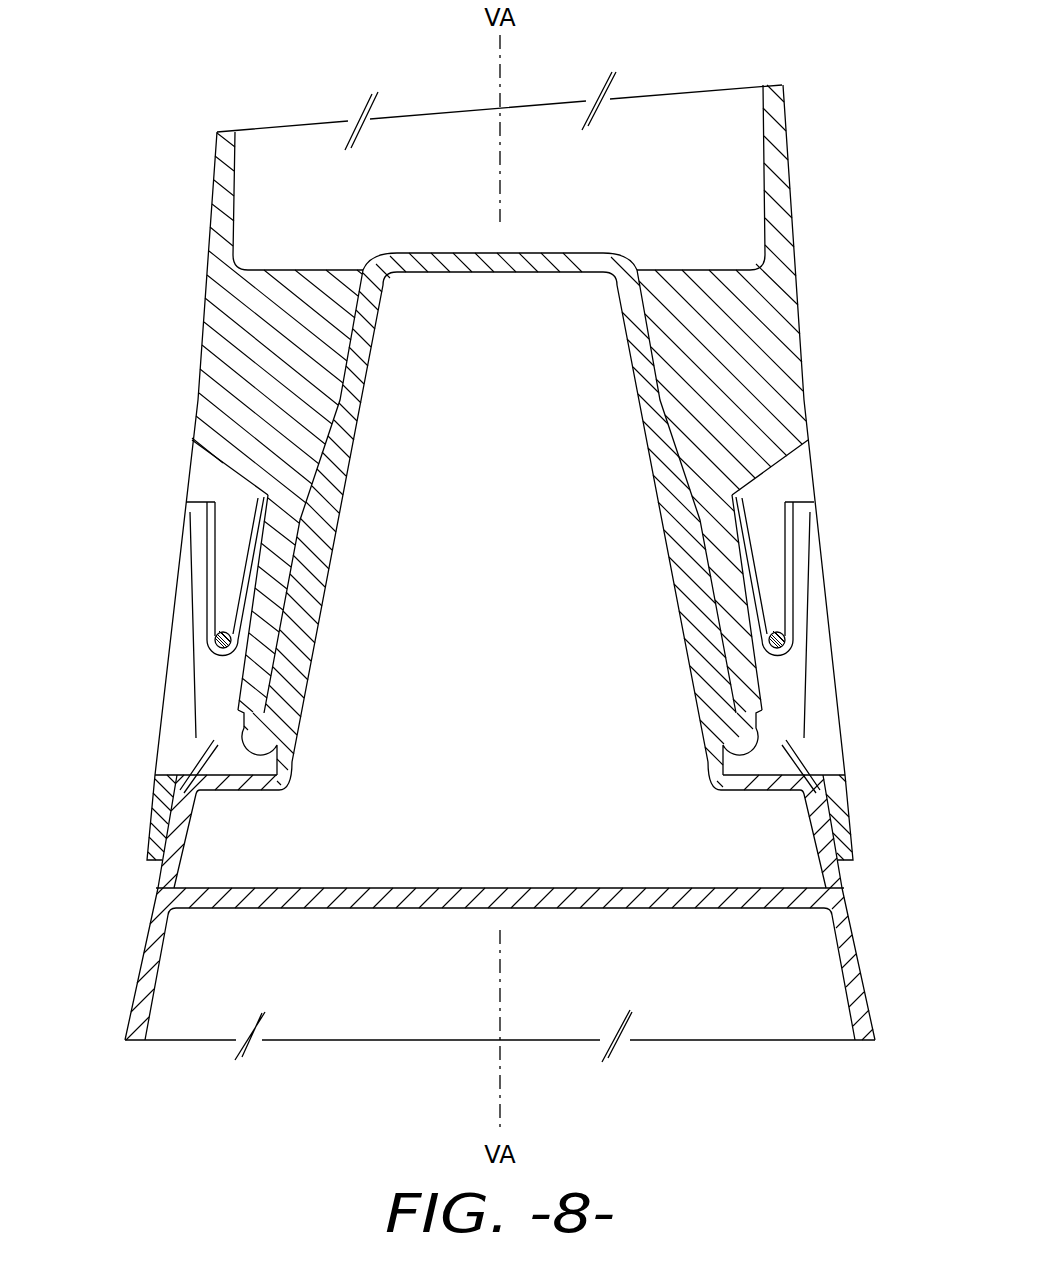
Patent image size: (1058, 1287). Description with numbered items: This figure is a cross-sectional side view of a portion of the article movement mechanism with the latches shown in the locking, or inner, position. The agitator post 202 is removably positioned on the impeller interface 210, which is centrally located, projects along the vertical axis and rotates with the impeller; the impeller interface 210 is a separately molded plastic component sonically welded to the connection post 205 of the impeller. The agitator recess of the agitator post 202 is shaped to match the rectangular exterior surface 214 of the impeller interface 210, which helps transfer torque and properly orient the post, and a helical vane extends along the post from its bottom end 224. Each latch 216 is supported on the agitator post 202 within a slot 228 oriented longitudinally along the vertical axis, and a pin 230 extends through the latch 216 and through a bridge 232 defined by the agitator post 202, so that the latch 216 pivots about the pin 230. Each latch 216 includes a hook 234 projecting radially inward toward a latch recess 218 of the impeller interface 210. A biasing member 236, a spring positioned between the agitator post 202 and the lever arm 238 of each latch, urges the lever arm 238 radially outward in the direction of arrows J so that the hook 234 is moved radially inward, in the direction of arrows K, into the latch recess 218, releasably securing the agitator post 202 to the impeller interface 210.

The agitator post 202 is at (213, 174).
The connection post 205 is at (862, 970).
The impeller interface 210 is at (476, 450).
The exterior surface 214 is at (668, 403).
The latch 216 is at (190, 576).
The latch recess 218 is at (253, 768).
The bottom end 224 is at (172, 384).
The slot 228 is at (214, 471).
The pin 230 is at (209, 637).
The bridge 232 is at (275, 655).
The hook 234 is at (281, 748).
The biasing member 236 is at (257, 548).
The lever arm 238 is at (192, 528).
The arrows J is at (163, 512).
The arrows K is at (216, 722).